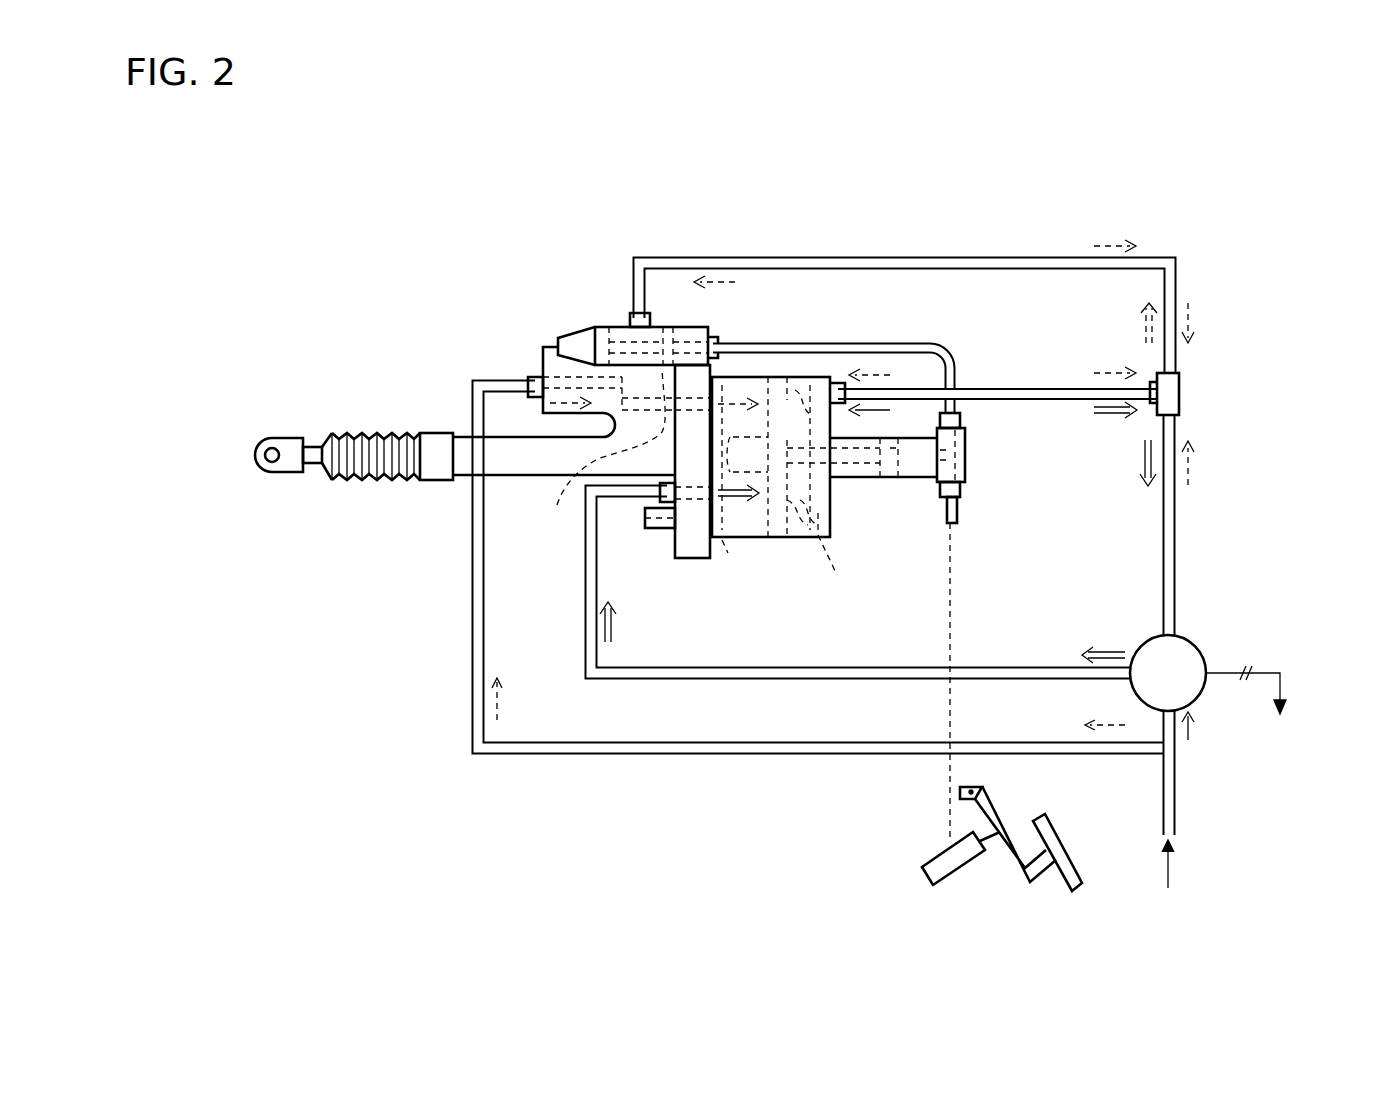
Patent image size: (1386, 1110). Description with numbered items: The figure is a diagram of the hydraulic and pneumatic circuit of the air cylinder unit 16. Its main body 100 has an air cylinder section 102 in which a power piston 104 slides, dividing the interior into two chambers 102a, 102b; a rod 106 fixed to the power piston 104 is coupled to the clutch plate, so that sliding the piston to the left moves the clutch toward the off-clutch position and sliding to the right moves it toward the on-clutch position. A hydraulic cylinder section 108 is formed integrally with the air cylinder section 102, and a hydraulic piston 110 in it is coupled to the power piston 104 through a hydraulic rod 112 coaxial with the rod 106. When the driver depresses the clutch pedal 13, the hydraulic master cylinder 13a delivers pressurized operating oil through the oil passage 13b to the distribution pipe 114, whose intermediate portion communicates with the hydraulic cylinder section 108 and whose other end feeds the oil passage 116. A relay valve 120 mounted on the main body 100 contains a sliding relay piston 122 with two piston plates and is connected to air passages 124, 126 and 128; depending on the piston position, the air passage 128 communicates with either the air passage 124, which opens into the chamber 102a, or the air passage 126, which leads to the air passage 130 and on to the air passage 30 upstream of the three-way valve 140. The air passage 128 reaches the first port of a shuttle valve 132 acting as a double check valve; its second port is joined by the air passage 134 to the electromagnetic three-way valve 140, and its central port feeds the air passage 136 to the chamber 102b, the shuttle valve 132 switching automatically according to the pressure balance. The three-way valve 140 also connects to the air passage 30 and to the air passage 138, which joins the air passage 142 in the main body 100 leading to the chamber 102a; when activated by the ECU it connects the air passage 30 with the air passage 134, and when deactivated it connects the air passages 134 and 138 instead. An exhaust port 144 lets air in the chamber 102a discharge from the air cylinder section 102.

The air cylinder unit 16 is at (1225, 234).
The clutch pedal 13 is at (1053, 837).
The hydraulic master cylinder 13a is at (960, 872).
The oil passage 13b is at (950, 792).
The air passage 30 is at (1178, 798).
The main body 100 is at (692, 565).
The air cylinder section 102 is at (782, 540).
The chamber 102a is at (740, 383).
The chamber 102b is at (813, 375).
The power piston 104 is at (834, 553).
The rod 106 is at (293, 473).
The hydraulic cylinder section 108 is at (913, 437).
The hydraulic piston 110 is at (903, 487).
The hydraulic rod 112 is at (850, 480).
The distribution pipe 114 is at (967, 453).
The oil passage 116 is at (957, 345).
The relay valve 120 is at (692, 327).
The relay piston 122 is at (623, 338).
The air passage 124 is at (591, 457).
The air passage 126 is at (565, 378).
The air passage 128 is at (703, 258).
The air passage 130 is at (472, 637).
The shuttle valve 132 is at (1182, 382).
The air passage 134 is at (1178, 562).
The air passage 136 is at (1058, 387).
The air passage 138 is at (1025, 666).
The three-way valve 140 is at (1195, 645).
The air passage 142 is at (749, 565).
The exhaust port 144 is at (657, 528).